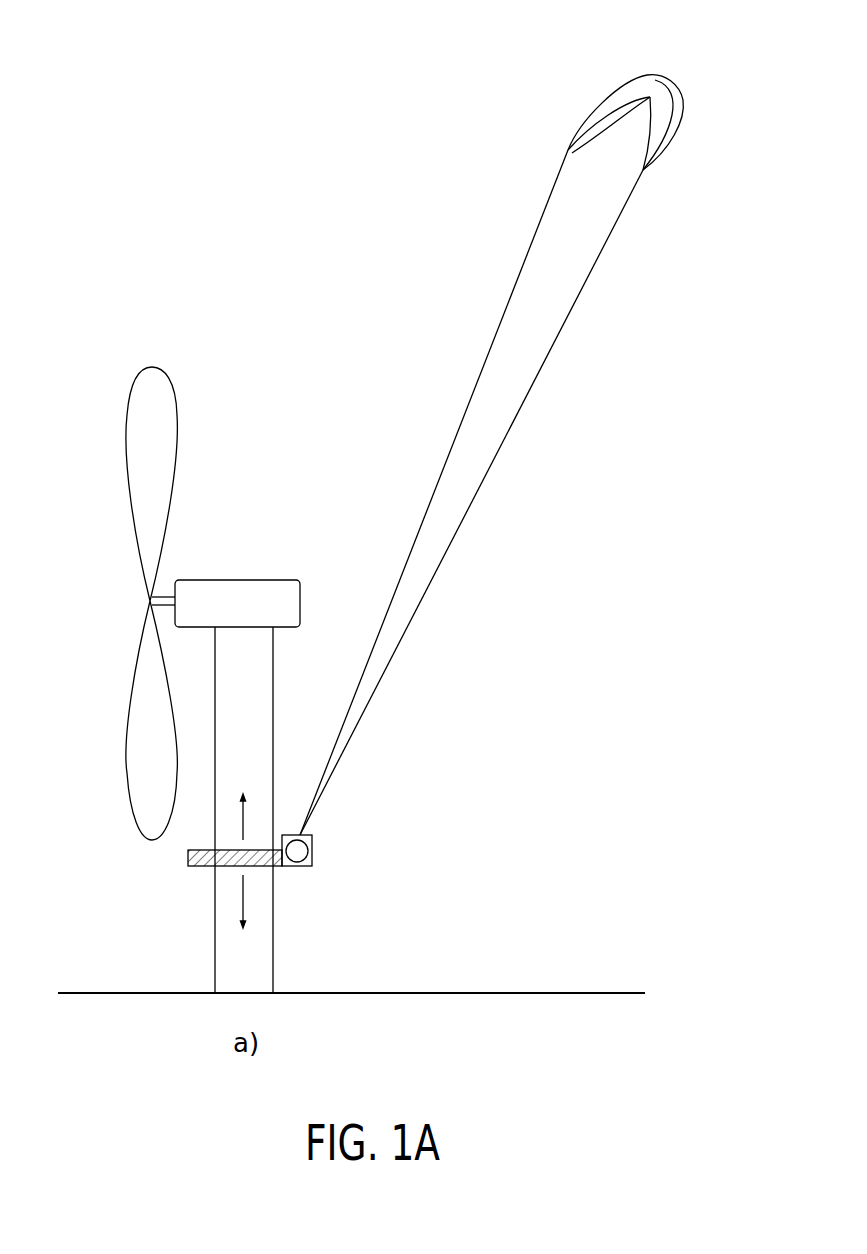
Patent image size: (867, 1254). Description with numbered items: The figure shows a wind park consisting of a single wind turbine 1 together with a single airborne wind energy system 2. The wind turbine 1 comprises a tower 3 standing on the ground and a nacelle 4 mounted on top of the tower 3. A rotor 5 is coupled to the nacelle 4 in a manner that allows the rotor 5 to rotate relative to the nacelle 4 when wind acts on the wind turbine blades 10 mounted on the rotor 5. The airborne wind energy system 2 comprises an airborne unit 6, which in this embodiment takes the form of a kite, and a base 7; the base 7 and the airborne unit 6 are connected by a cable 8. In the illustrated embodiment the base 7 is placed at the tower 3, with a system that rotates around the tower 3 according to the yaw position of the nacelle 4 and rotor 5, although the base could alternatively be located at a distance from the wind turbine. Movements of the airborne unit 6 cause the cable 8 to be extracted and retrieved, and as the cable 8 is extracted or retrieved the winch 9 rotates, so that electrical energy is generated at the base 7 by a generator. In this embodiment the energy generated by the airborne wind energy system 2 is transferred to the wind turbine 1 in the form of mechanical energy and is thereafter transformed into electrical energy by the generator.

The wind turbine 1 is at (193, 680).
The airborne wind energy system 2 is at (491, 422).
The tower 3 is at (226, 948).
The nacelle 4 is at (292, 588).
The rotor 5 is at (150, 602).
The airborne unit 6 is at (562, 91).
The base 7 is at (258, 858).
The cable 8 is at (490, 357).
The winch 9 is at (312, 840).
The wind turbine blades 10 is at (135, 415).